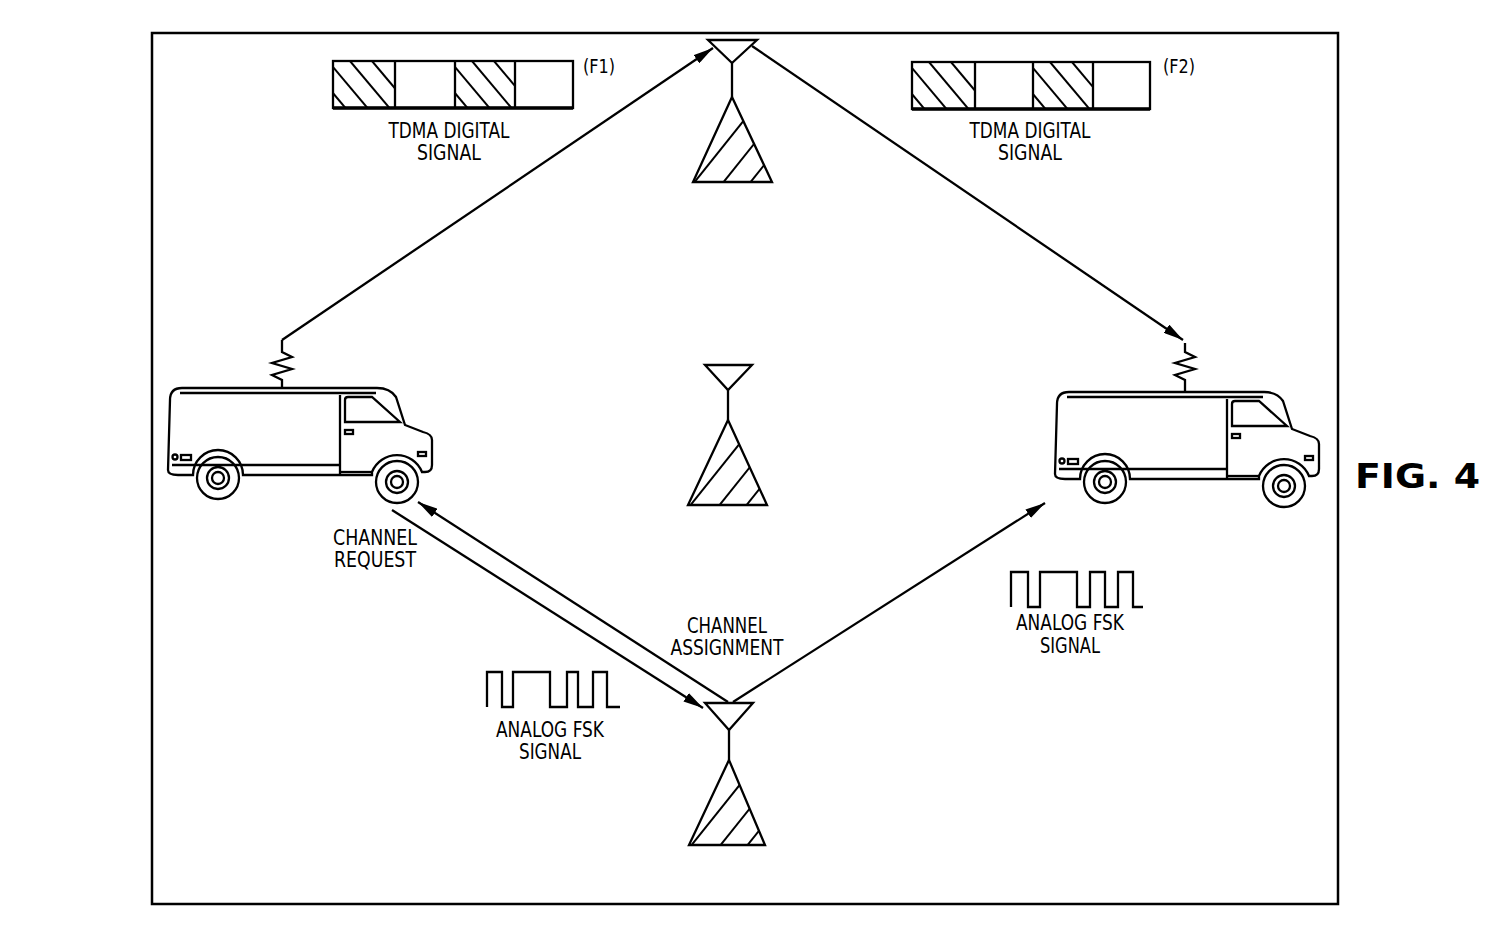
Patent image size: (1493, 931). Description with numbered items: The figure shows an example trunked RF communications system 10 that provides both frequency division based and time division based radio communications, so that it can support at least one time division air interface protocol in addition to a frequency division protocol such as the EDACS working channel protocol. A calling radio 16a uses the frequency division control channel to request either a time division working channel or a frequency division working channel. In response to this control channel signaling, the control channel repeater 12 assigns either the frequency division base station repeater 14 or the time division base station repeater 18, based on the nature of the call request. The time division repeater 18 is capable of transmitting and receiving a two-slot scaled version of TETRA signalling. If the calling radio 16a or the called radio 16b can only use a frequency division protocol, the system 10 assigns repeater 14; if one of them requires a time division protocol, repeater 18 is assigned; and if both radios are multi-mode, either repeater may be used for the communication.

The trunked RF communications system 10 is at (1339, 155).
The control channel repeater 12 is at (747, 793).
The frequency division base station repeater 14 is at (738, 463).
The calling radio 16a is at (258, 386).
The called radio 16b is at (1262, 397).
The time division base station repeater 18 is at (738, 147).